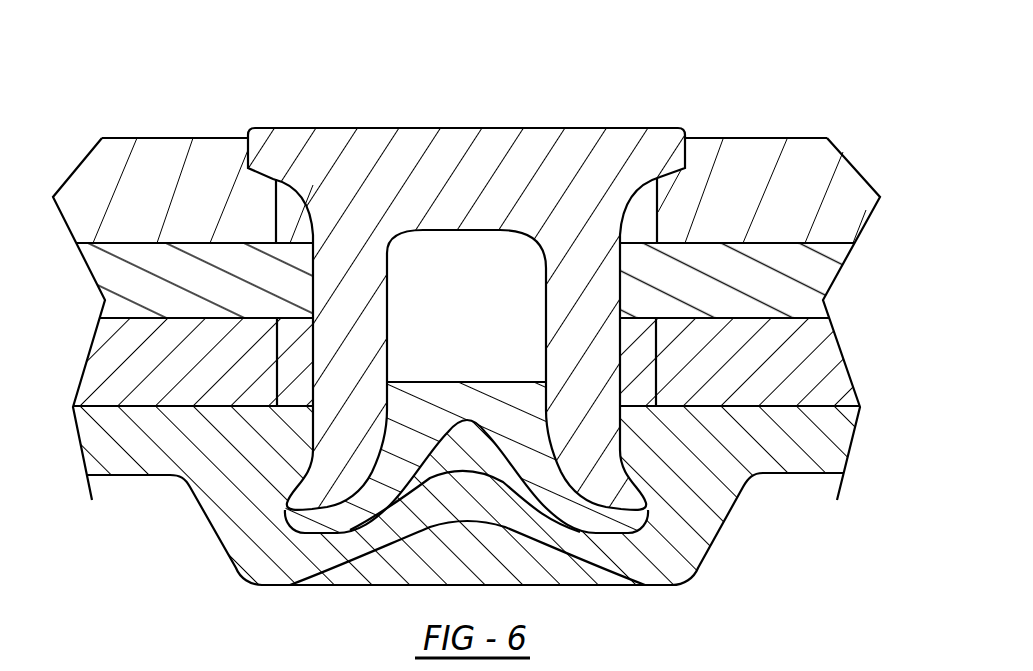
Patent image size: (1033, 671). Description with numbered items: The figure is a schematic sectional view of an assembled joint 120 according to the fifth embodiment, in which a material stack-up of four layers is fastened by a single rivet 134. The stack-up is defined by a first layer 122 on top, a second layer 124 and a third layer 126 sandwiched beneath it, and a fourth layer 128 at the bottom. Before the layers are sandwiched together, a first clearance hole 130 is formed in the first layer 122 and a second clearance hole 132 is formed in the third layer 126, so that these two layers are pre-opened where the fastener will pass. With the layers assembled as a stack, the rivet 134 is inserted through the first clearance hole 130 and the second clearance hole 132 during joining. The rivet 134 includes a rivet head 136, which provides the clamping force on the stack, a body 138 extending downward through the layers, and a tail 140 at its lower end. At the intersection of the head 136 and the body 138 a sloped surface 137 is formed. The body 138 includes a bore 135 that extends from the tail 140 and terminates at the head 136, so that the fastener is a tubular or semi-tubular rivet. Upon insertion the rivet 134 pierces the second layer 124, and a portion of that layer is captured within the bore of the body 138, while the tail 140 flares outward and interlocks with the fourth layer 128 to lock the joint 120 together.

The joint 120 is at (136, 100).
The first layer 122 is at (112, 202).
The second layer 124 is at (143, 276).
The third layer 126 is at (133, 367).
The fourth layer 128 is at (123, 435).
The first clearance hole 130 is at (293, 221).
The second clearance hole 132 is at (312, 447).
The rivet 134 is at (282, 148).
The bore 135 is at (493, 300).
The rivet head 136 is at (503, 235).
The sloped surface 137 is at (277, 177).
The body 138 is at (312, 447).
The tail 140 is at (620, 480).